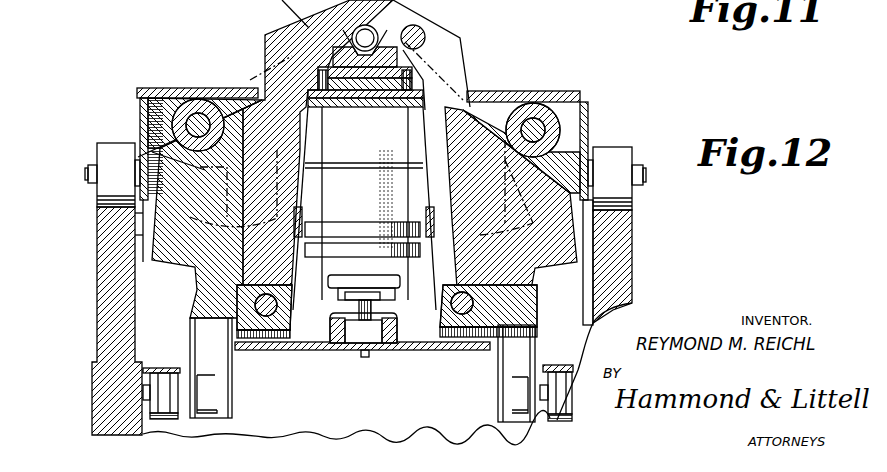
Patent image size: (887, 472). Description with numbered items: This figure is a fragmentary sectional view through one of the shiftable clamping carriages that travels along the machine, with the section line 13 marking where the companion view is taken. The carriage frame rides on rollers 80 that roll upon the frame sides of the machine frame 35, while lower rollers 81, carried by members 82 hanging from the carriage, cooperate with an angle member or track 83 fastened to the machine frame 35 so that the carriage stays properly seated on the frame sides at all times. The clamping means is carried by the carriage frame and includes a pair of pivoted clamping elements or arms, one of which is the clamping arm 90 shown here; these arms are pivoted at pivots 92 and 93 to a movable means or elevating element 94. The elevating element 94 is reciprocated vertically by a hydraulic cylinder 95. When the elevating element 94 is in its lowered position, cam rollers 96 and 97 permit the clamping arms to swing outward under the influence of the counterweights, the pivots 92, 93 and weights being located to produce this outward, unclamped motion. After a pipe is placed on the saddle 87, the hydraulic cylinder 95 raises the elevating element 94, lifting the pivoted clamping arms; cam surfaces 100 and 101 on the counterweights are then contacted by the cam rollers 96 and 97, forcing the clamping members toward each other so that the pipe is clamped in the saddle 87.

The section line 13- 13 is at (569, 26).
The machine frame 35 is at (125, 301).
The rollers 80 is at (109, 152).
The lower rollers 81 is at (177, 420).
The members 82 is at (228, 372).
The angle member or track 83 is at (170, 368).
The saddle 87 is at (382, 33).
The clamping element or arm 90 is at (452, 50).
The pivot 92 is at (445, 338).
The pivot 93 is at (278, 318).
The movable means or elevating element 94 is at (397, 350).
The hydraulic cylinder 95 is at (340, 202).
The cam roller 96 is at (535, 107).
The cam roller 97 is at (187, 100).
The cam surface 100 is at (552, 150).
The cam surface 101 is at (170, 152).